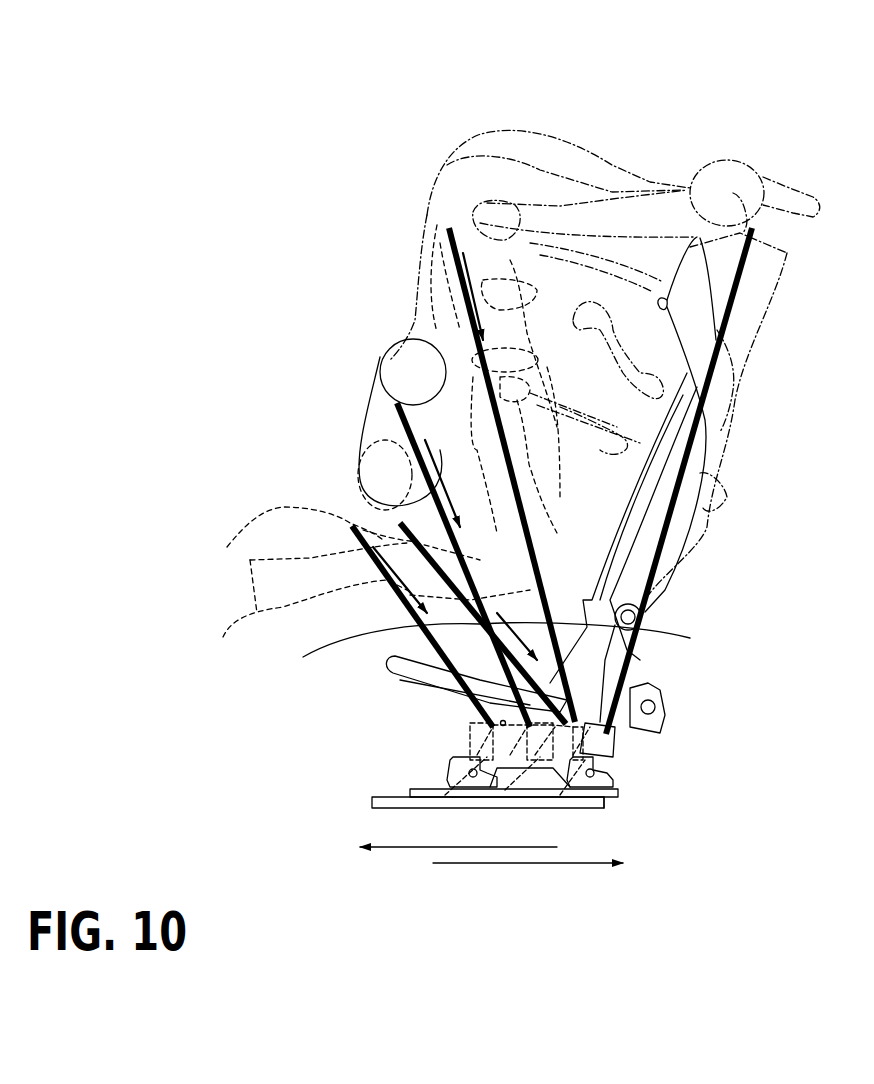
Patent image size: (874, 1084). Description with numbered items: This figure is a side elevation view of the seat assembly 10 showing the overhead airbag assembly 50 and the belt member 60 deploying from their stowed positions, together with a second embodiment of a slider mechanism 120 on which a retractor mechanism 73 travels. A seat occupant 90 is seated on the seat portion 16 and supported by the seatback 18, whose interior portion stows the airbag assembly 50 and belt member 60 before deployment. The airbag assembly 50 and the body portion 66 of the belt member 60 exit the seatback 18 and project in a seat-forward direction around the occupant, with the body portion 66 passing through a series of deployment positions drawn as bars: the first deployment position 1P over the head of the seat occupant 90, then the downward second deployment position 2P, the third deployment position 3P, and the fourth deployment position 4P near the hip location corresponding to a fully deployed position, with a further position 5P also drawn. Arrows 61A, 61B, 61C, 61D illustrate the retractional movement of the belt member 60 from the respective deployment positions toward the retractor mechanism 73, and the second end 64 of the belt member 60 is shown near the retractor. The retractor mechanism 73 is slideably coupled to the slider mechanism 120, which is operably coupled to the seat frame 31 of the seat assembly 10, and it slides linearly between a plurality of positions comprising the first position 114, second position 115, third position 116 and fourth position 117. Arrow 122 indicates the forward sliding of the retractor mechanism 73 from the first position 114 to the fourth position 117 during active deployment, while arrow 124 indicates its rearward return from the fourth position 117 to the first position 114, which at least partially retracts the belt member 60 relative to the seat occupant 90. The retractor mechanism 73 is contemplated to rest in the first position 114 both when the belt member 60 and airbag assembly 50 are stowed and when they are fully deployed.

The seat assembly 10 is at (410, 130).
The airbag assembly 50 is at (620, 157).
The seatback 18 is at (747, 343).
The belt member 60 is at (693, 440).
The first deployment position 1P is at (753, 233).
The second deployment position 2P is at (445, 231).
The third deployment position 3P is at (395, 407).
The fourth deployment position 4P is at (400, 522).
The fifth position bar 5P is at (350, 532).
The arrow 61A is at (470, 277).
The arrow 61B is at (452, 497).
The arrow 61C is at (647, 620).
The arrow 61D is at (341, 618).
The body portion 66 is at (468, 400).
The seat occupant 90 is at (442, 388).
The seat portion 16 is at (427, 690).
The seat frame 31 is at (437, 732).
The second end 64 is at (625, 715).
The retractor mechanism 73 is at (627, 743).
The first position 114 is at (627, 777).
The second position 115 is at (560, 795).
The third position 116 is at (505, 790).
The fourth position 117 is at (445, 795).
The slider mechanism 120 is at (582, 795).
The arrow 122 is at (408, 847).
The arrow 124 is at (517, 865).